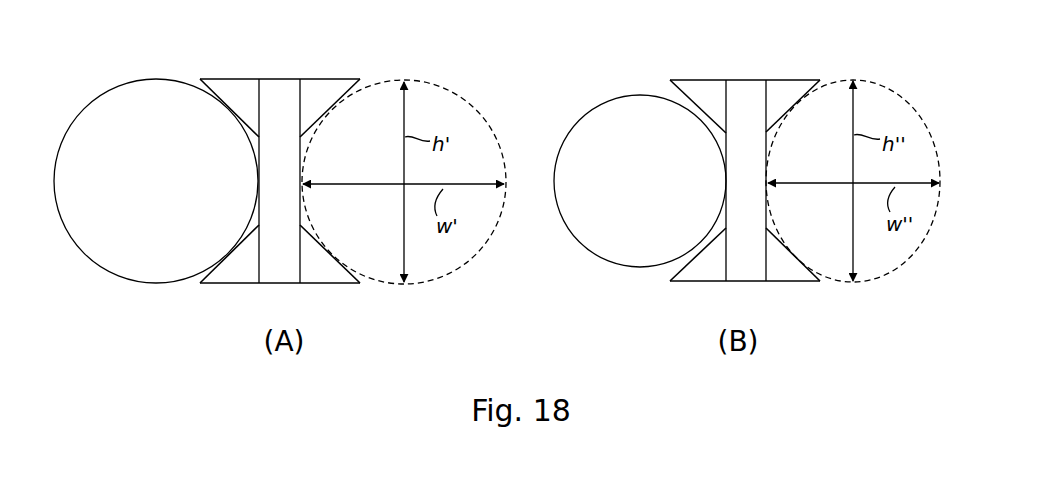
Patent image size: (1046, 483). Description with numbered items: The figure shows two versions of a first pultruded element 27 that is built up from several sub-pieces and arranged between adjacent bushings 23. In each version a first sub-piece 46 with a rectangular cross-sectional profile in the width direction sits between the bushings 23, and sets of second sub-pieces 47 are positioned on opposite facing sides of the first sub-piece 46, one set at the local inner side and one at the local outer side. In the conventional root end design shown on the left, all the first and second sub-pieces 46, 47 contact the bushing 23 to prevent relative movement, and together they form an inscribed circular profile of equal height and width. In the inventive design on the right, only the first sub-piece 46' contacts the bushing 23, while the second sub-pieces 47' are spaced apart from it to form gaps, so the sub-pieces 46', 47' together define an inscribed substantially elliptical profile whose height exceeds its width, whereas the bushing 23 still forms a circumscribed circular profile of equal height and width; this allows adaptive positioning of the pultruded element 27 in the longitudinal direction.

The bushing 23 is at (165, 192).
The first pultruded element 27 is at (184, 62).
The first sub-piece 46 is at (295, 153).
The second sub-pieces 47 is at (289, 153).
The first sub-piece 46' is at (762, 155).
The second sub-pieces 47' is at (756, 155).